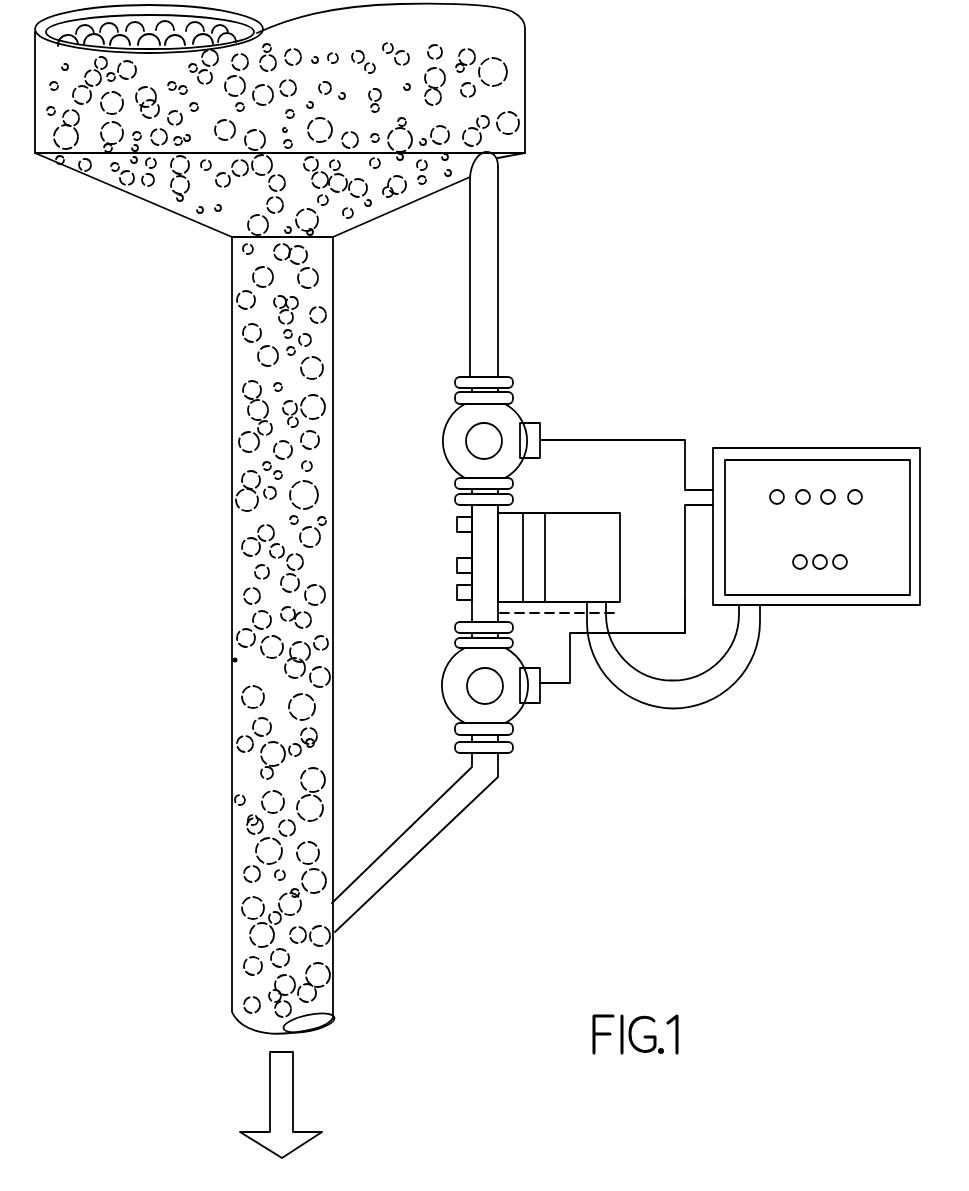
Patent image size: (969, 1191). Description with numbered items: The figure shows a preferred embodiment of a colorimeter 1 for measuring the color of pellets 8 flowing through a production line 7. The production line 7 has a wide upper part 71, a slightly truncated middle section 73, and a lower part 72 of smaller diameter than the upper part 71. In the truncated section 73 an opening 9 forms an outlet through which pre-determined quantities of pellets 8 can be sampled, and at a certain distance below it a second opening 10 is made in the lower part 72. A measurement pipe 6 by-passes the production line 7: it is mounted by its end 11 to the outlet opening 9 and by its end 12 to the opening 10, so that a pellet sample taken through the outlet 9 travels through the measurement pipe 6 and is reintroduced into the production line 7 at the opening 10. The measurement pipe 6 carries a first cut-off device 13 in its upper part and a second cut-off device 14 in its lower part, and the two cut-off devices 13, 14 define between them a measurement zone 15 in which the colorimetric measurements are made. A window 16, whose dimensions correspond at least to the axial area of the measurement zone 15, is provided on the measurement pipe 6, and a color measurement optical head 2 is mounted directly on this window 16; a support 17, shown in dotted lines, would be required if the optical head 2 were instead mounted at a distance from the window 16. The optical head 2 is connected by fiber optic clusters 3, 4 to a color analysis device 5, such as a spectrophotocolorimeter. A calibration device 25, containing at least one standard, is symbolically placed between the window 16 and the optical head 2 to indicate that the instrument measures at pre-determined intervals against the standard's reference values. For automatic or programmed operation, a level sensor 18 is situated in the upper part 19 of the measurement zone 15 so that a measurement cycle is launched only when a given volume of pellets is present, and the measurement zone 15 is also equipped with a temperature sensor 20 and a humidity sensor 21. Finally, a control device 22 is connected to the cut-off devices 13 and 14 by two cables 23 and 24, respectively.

The colorimeter 1 is at (668, 287).
The color measurement optical head 2 is at (597, 545).
The fiber optic cluster 3 is at (692, 682).
The fiber optic cluster 4 is at (657, 707).
The color analysis device 5 is at (750, 495).
The measurement pipe 6 is at (460, 308).
The production line 7 is at (138, 233).
The pellets 8 is at (98, 122).
The opening 9 is at (505, 160).
The opening 10 is at (331, 912).
The end 11 is at (500, 180).
The end 12 is at (335, 933).
The first cut-off device 13 is at (455, 443).
The second cut-off device 14 is at (460, 690).
The measurement zone 15 is at (488, 550).
The window 16 is at (510, 535).
The support 17 is at (552, 612).
The level sensor 18 is at (457, 525).
The upper part of the measurement zone 19 is at (487, 518).
The temperature sensor 20 is at (457, 565).
The humidity sensor 21 is at (457, 593).
The control device 22 is at (875, 563).
The cable 23 is at (660, 440).
The cable 24 is at (688, 615).
The calibration device 25 is at (537, 540).
The upper part 71 is at (233, 97).
The lower part 72 is at (266, 318).
The middle section 73 is at (252, 200).